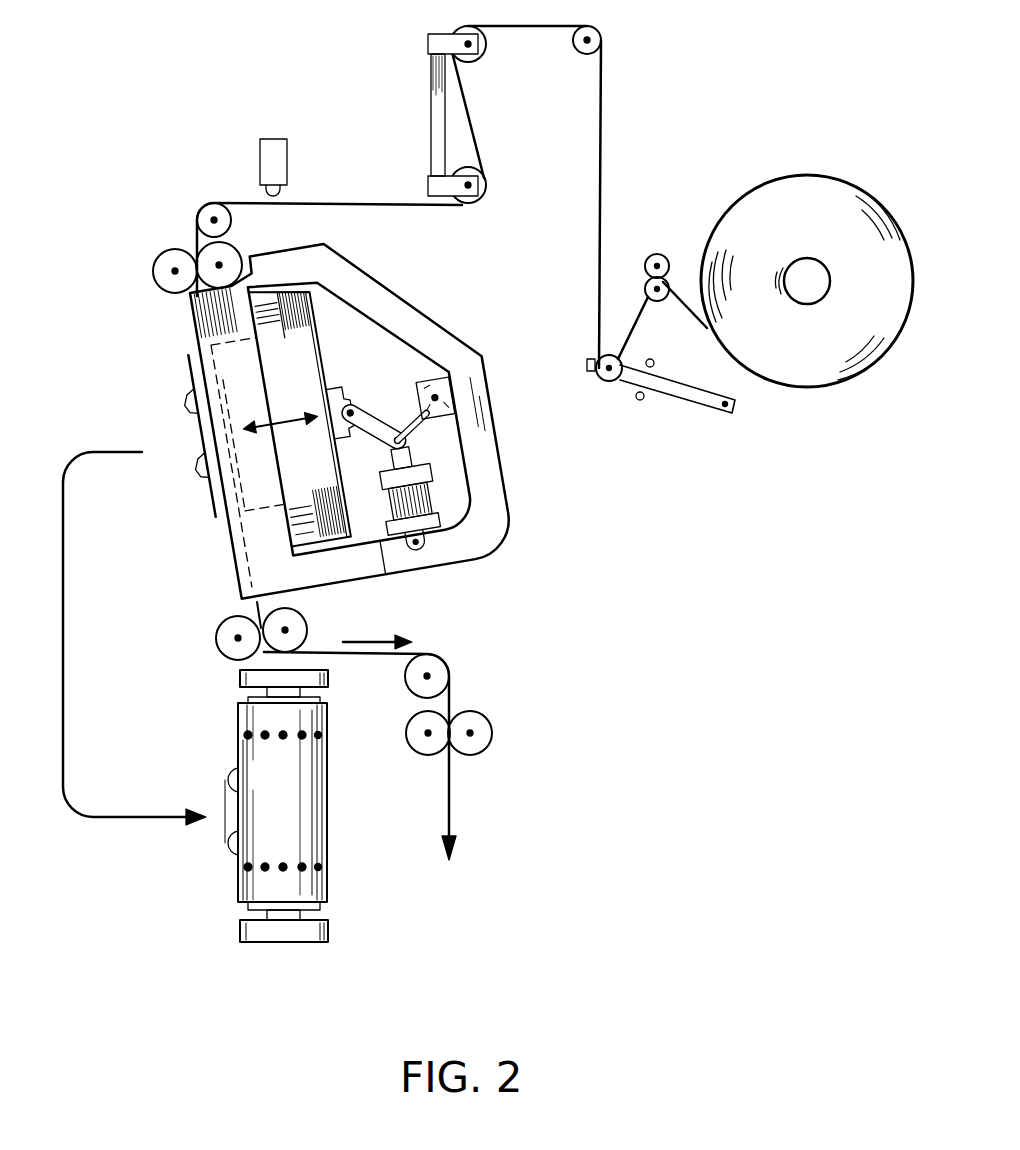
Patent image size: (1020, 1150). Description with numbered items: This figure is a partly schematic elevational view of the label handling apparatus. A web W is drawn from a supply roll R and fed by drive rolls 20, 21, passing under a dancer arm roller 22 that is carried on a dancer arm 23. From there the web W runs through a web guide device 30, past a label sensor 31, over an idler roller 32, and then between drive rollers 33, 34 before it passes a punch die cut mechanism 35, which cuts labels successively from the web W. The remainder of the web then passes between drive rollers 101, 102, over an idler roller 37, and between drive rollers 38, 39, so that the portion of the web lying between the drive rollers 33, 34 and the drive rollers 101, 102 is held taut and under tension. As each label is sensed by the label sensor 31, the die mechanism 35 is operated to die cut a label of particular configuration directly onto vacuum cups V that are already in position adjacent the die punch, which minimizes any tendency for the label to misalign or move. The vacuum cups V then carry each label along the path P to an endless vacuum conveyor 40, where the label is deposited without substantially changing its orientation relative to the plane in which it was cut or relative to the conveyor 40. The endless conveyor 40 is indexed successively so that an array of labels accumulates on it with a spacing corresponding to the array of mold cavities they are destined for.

The drive roll 20 is at (657, 254).
The drive roll 21 is at (660, 300).
The dancer arm roller 22 is at (608, 376).
The dancer arm 23 is at (687, 395).
The web guide device 30 is at (480, 63).
The label sensor 31 is at (289, 146).
The idler roller 32 is at (204, 214).
The drive roller 33 is at (228, 257).
The drive roller 34 is at (163, 268).
The punch die cut mechanism 35 is at (370, 572).
The idler roller 37 is at (443, 665).
The drive roller 38 is at (428, 742).
The drive roller 39 is at (470, 742).
The endless vacuum conveyor 40 is at (322, 766).
The drive roller 101 is at (222, 642).
The drive roller 102 is at (293, 623).
The web roll R is at (812, 192).
The web W is at (535, 28).
The vacuum cups V is at (198, 455).
The path P is at (65, 573).